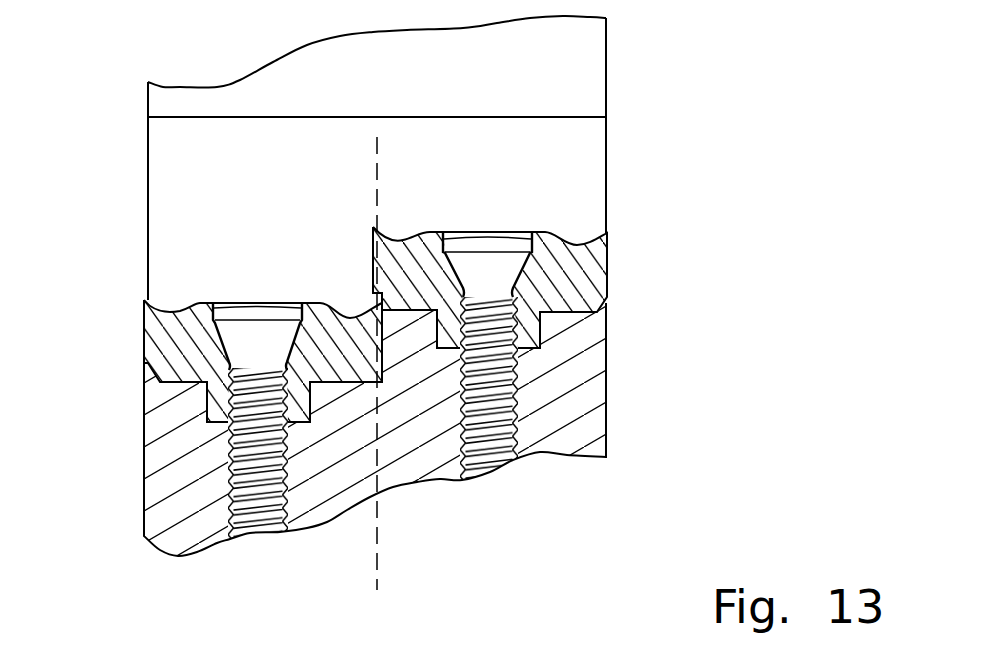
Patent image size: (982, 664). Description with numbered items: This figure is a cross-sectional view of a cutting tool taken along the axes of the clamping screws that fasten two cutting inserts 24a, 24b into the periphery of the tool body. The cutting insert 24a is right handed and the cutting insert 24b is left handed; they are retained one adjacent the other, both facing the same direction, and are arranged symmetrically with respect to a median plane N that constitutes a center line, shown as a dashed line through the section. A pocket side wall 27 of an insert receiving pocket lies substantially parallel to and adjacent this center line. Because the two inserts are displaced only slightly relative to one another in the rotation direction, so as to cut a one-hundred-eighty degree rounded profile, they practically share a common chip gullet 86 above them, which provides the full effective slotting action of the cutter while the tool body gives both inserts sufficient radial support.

The common chip gullet 86 is at (568, 165).
The median plane N is at (376, 172).
The cutting insert 24a is at (577, 278).
The cutting insert 24b is at (185, 352).
The pocket side wall 27 is at (360, 317).